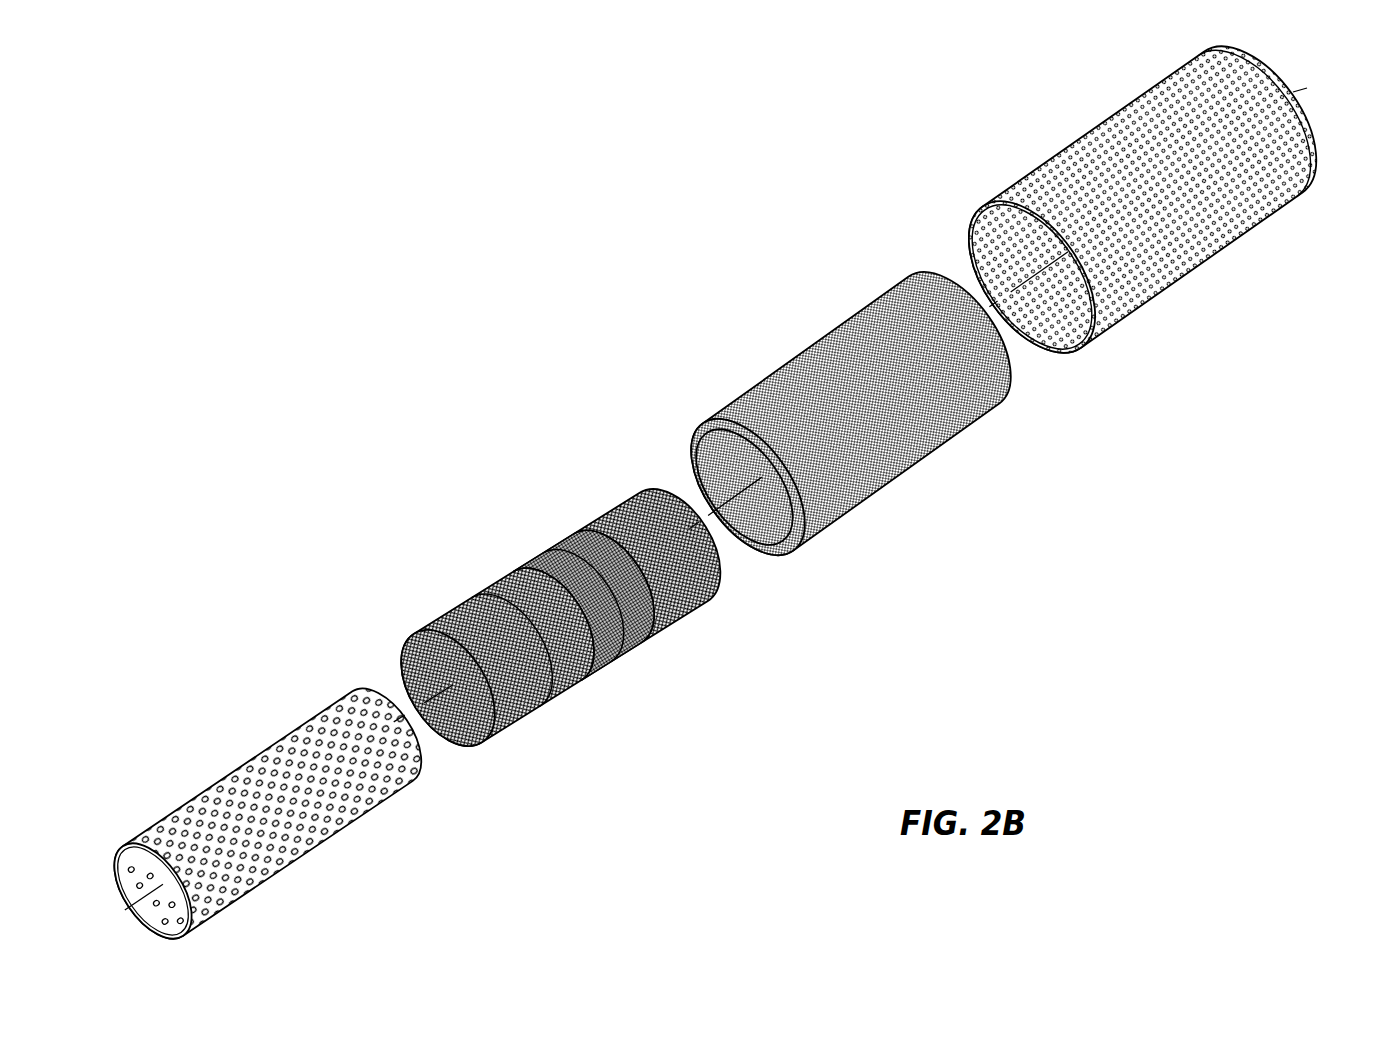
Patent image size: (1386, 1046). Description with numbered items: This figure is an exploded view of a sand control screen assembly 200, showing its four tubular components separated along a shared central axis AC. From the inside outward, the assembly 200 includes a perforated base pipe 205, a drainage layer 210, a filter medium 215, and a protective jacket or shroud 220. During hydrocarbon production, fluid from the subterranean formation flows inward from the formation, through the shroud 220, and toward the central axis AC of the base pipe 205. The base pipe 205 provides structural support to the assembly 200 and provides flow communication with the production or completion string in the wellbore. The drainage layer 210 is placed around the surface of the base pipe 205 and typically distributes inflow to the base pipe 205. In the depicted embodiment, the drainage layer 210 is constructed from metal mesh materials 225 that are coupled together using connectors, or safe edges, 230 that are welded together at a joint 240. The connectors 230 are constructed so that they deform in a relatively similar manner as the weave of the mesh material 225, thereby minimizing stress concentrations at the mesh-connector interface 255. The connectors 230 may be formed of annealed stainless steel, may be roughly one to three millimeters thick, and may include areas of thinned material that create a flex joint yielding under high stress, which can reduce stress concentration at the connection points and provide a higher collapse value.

The screen assembly 200 is at (345, 235).
The perforated base pipe 205 is at (166, 802).
The drainage layer 210 is at (490, 532).
The filter medium 215 is at (760, 332).
The protective jacket or shroud 220 is at (1058, 120).
The metal mesh materials 225 is at (613, 527).
The connectors 230 is at (605, 630).
The joint 240 is at (587, 683).
The mesh-connector interface 255 is at (543, 547).
The central axis AC is at (118, 918).